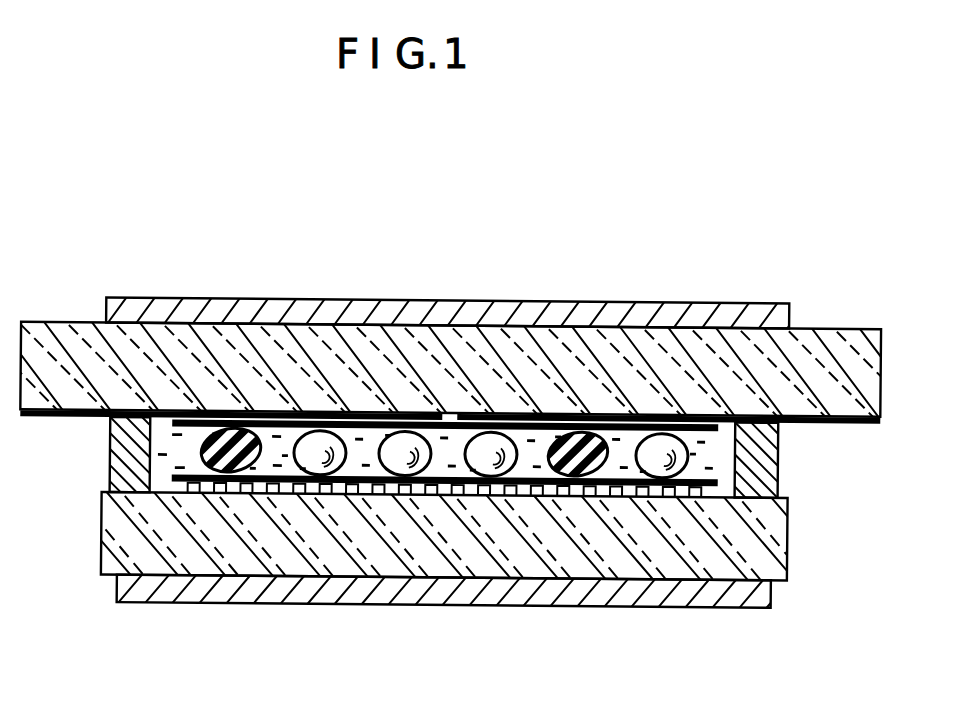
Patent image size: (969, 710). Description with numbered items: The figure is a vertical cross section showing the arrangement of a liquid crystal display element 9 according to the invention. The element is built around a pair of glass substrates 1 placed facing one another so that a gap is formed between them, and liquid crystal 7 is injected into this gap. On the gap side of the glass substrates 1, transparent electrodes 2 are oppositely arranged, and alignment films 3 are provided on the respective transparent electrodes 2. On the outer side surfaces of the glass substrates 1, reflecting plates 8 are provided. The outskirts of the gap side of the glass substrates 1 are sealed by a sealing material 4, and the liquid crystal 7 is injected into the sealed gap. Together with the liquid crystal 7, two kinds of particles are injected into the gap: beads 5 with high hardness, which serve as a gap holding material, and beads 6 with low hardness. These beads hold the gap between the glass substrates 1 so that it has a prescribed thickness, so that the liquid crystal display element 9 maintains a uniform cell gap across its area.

The glass substrate 1 is at (835, 326).
The transparent electrode 2 is at (73, 421).
The alignment film 3 is at (393, 414).
The sealing material 4 is at (113, 462).
The beads with high hardness 5 is at (507, 486).
The beads with low hardness 6 is at (247, 456).
The liquid crystal 7 is at (288, 422).
The reflecting plate 8 is at (472, 300).
The liquid crystal display element 9 is at (313, 210).